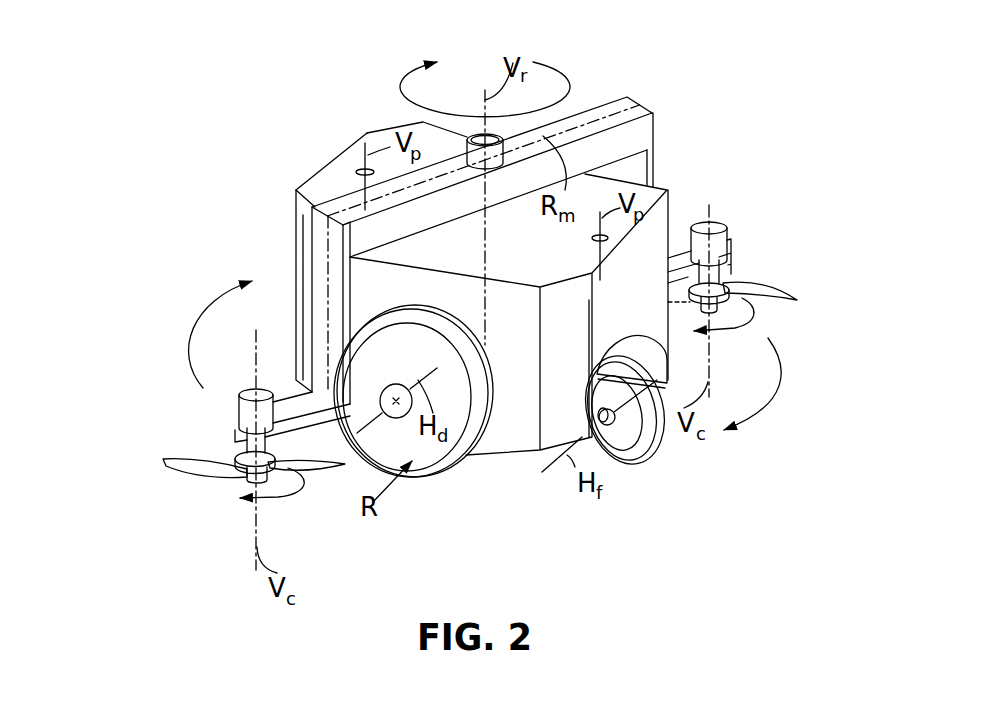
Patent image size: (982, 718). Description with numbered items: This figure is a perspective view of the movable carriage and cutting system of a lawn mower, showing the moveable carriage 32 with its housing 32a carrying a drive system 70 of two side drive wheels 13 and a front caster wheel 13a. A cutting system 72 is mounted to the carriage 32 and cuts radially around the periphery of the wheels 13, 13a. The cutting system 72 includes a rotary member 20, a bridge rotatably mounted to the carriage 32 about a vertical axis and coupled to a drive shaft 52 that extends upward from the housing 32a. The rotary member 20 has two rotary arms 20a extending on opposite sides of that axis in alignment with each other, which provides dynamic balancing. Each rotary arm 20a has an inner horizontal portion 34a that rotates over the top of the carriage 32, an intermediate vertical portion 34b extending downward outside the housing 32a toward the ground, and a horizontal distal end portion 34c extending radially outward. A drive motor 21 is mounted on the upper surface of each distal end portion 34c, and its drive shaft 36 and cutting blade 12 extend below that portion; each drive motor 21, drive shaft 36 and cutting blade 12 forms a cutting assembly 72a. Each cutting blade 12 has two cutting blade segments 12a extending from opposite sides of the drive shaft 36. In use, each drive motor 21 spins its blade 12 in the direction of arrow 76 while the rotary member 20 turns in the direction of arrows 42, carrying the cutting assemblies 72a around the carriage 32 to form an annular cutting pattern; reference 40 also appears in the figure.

The cutting blade 12 is at (177, 470).
The cutting blade segment 12a is at (208, 473).
The drive wheel 13 is at (463, 447).
The front caster wheel 13a is at (645, 445).
The rotary member 20 is at (629, 88).
The rotary arm 20a is at (348, 208).
The drive motor 21 is at (248, 395).
The moveable carriage 32 is at (383, 133).
The housing 32a is at (367, 133).
The inner horizontal portion 34a is at (647, 110).
The intermediate vertical portion 34b is at (323, 260).
The horizontal distal end portion 34c is at (290, 405).
The drive shaft 36 is at (266, 426).
The frame rotation direction 40 is at (412, 62).
The direction of rotation arrows 42 is at (195, 318).
The drive shaft 52 is at (480, 133).
The drive system 70 is at (444, 494).
The cutting system 72 is at (138, 418).
The cutting assembly 72a is at (138, 452).
The direction of blade rotation arrow 76 is at (272, 498).